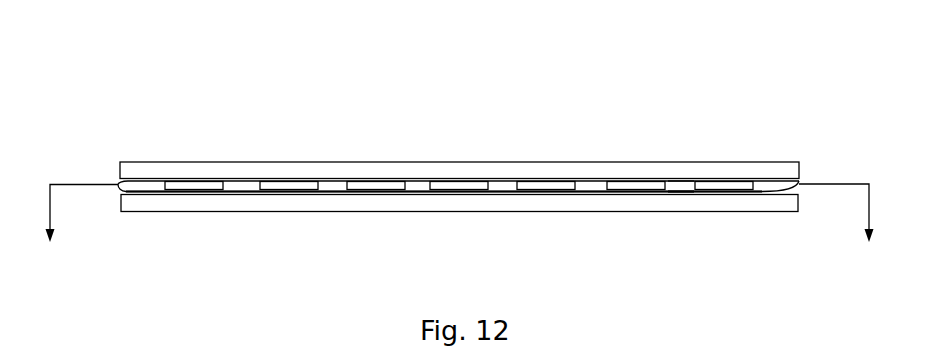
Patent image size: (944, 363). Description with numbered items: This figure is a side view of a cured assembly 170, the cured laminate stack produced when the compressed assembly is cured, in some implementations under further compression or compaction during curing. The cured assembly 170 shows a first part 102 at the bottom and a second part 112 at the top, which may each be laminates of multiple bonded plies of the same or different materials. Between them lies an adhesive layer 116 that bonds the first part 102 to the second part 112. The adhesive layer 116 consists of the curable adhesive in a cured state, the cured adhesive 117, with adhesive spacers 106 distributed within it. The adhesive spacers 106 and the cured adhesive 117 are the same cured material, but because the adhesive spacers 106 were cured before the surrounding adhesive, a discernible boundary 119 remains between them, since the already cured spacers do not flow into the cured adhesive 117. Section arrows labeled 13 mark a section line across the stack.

The cured assembly 170 is at (185, 84).
The second part 112 is at (355, 173).
The first part 102 is at (273, 203).
The adhesive layer 116 is at (150, 171).
The boundary 119 is at (683, 174).
The cured adhesive 117 is at (676, 184).
The adhesive spacers 106 is at (300, 185).
The section line 13- 13 is at (462, 230).